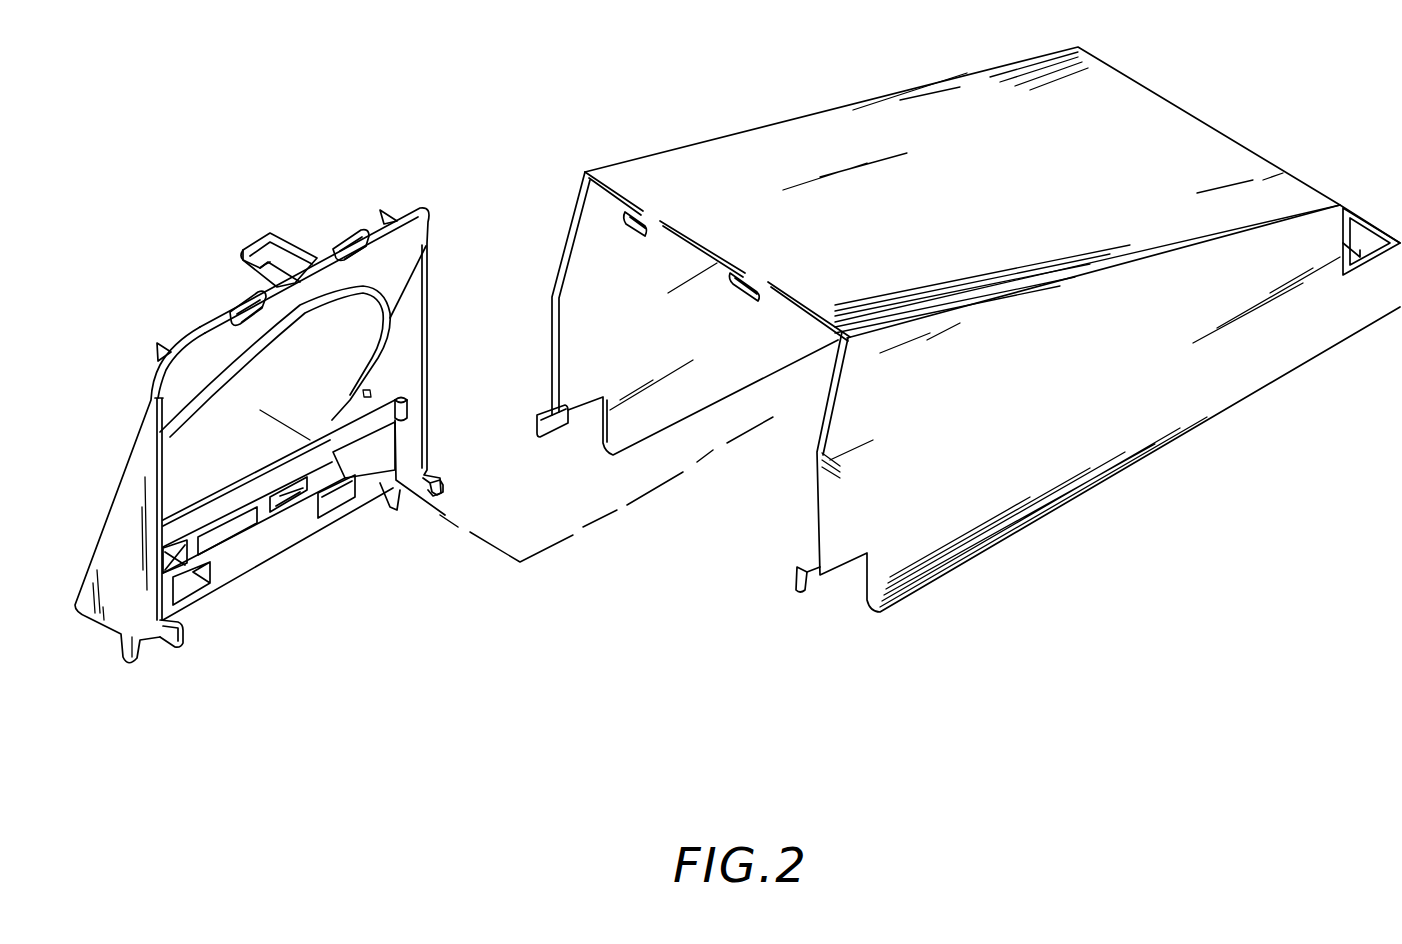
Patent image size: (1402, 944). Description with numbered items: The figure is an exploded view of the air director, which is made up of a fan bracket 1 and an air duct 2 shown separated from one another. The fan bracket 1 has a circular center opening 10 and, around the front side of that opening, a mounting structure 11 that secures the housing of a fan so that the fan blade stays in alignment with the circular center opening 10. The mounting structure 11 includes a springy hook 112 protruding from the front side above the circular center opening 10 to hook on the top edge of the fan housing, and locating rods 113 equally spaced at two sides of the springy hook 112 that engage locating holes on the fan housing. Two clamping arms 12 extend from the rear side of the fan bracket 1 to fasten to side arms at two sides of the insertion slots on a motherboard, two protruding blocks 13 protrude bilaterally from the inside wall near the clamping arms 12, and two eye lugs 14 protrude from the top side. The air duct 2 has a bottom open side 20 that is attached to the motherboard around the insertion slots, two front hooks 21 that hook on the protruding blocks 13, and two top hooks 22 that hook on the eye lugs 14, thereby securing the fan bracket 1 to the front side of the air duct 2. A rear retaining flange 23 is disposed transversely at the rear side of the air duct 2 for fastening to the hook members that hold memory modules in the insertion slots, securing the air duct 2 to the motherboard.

The fan bracket 1 is at (427, 273).
The circular center opening 10 is at (382, 336).
The mounting structure 11 is at (293, 245).
The springy hook 112 is at (260, 243).
The locating rods 113 is at (387, 213).
The eye lugs 14 is at (250, 298).
The clamping arms 12 is at (183, 633).
The protruding blocks 13 is at (407, 409).
The air duct 2 is at (810, 130).
The bottom open side 20 is at (763, 477).
The front hooks 21 is at (557, 427).
The top hooks 22 is at (742, 282).
The rear retaining flange 23 is at (1355, 250).